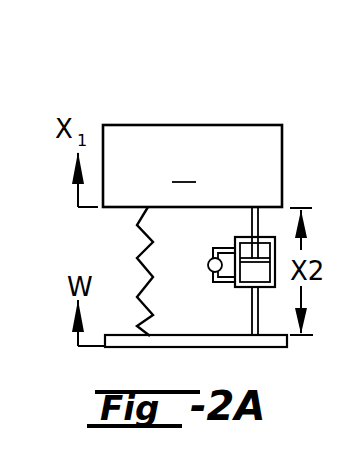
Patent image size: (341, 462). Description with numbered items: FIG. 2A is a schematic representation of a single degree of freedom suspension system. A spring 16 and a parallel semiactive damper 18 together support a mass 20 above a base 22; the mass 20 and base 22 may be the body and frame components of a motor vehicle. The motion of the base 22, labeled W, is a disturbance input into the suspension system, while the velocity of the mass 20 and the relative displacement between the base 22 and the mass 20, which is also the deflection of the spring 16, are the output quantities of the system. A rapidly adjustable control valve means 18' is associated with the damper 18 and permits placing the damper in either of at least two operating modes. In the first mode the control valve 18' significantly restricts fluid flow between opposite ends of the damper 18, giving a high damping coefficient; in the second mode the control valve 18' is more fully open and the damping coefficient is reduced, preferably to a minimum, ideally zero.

The spring 16 is at (141, 248).
The semiactive damper 18 is at (217, 271).
The control valve means 18' is at (200, 255).
The mass 20 is at (201, 125).
The base 22 is at (132, 347).